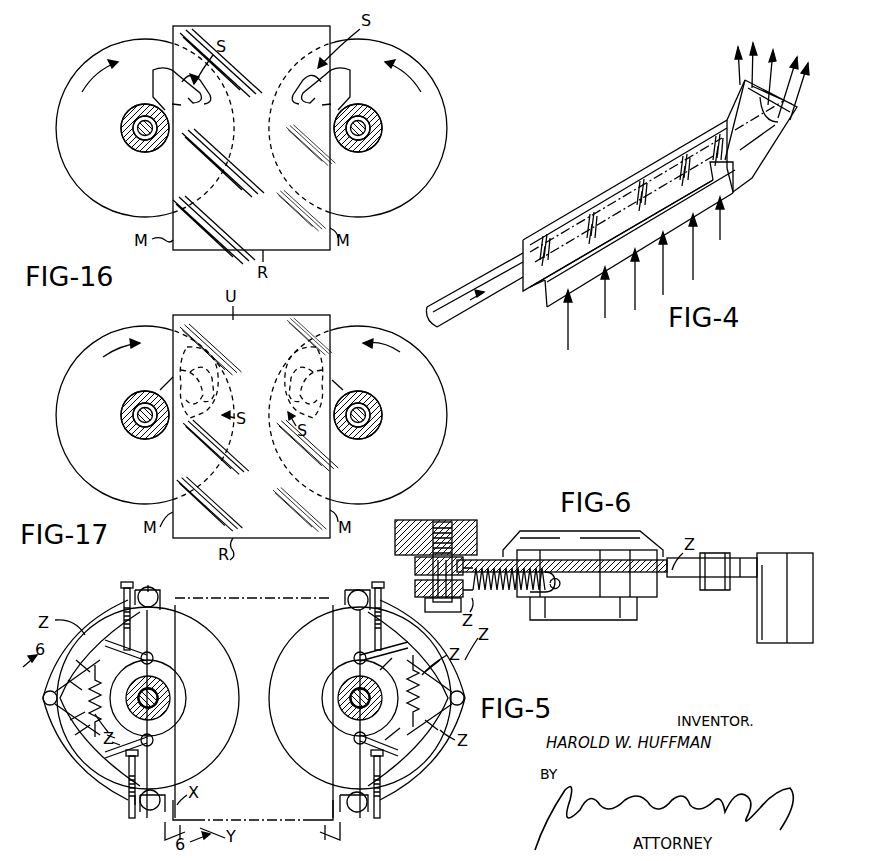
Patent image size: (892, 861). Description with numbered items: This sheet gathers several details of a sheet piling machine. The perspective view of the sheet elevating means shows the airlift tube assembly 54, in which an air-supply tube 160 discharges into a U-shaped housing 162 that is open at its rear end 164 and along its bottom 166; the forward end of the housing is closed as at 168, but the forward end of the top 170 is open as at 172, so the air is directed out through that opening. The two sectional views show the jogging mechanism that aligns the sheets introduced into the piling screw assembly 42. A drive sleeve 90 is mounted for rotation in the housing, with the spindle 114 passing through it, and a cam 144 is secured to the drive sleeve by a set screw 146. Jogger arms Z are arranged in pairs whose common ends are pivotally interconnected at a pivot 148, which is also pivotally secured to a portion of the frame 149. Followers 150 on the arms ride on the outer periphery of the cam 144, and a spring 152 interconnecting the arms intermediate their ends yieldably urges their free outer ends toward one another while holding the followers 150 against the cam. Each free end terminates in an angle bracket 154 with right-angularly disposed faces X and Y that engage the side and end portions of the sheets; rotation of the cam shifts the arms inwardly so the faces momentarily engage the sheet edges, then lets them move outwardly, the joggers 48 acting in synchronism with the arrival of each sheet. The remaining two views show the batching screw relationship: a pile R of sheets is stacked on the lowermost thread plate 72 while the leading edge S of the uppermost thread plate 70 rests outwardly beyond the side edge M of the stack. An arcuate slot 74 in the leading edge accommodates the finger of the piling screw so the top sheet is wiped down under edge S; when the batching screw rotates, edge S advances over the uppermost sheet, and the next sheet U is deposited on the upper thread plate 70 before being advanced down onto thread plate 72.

In FIG. 5, the piling screw assembly 42 is at (225, 648).
In FIG. 6, the joggers 48 is at (760, 620).
In FIG. 4, the airlift tube assembly 54 is at (573, 203).
In FIG. 16, the uppermost thread plate 70 is at (173, 63).
In FIG. 17, the uppermost thread plate 70 is at (218, 395).
In FIG. 16, the thread plate 72 is at (108, 148).
In FIG. 17, the thread plate 72 is at (68, 452).
In FIG. 16, the arcuate slot 74 is at (190, 104).
In FIG. 17, the arcuate slot 74 is at (200, 425).
In FIG. 5, the drive sleeve 90 is at (170, 712).
In FIG. 5, the spindle 114 is at (160, 684).
In FIG. 6, the cam 144 is at (615, 555).
In FIG. 5, the cam 144 is at (172, 678).
In FIG. 5, the set screw 146 is at (180, 700).
In FIG. 6, the pivot 148 is at (478, 545).
In FIG. 5, the pivot 148 is at (50, 705).
In FIG. 6, the frame 149 is at (441, 520).
In FIG. 6, the followers 150 is at (655, 600).
In FIG. 5, the followers 150 is at (152, 656).
In FIG. 6, the spring 152 is at (512, 600).
In FIG. 5, the spring 152 is at (72, 730).
In FIG. 5, the angle bracket 154 is at (185, 812).
In FIG. 4, the air-supply tube 160 is at (472, 305).
In FIG. 4, the U-shaped housing 162 is at (655, 190).
In FIG. 4, the rear end 164 is at (538, 298).
In FIG. 4, the bottom 166 is at (588, 280).
In FIG. 4, the forward end 168 is at (760, 148).
In FIG. 4, the top 170 is at (595, 207).
In FIG. 4, the opening 172 is at (730, 112).